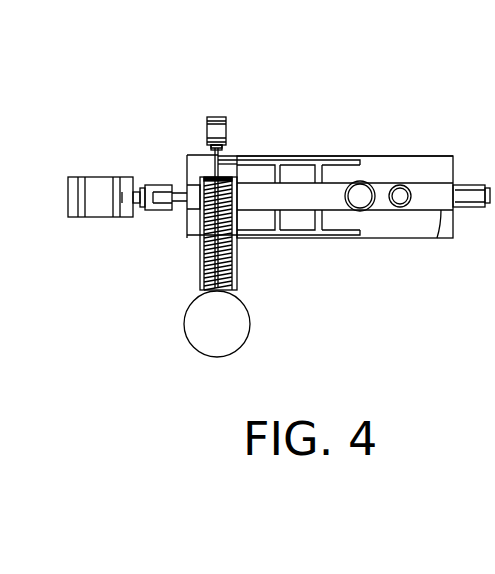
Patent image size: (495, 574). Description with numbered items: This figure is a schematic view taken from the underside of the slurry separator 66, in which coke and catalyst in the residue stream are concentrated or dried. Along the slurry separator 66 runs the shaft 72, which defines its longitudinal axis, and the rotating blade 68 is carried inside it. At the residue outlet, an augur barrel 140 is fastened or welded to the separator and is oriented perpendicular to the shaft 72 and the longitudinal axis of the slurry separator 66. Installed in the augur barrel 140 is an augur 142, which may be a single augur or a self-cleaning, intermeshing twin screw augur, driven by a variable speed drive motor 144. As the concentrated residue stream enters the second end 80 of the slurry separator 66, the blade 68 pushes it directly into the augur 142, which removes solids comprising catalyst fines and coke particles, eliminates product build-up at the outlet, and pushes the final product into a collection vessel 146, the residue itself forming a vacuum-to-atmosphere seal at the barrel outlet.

The slurry separator 66 is at (354, 118).
The blade 68 is at (357, 230).
The shaft 72 is at (438, 236).
The second end 80 is at (165, 228).
The augur barrel 140 is at (203, 177).
The augur 142 is at (200, 255).
The variable speed drive motor 144 is at (221, 117).
The collection vessel 146 is at (228, 340).